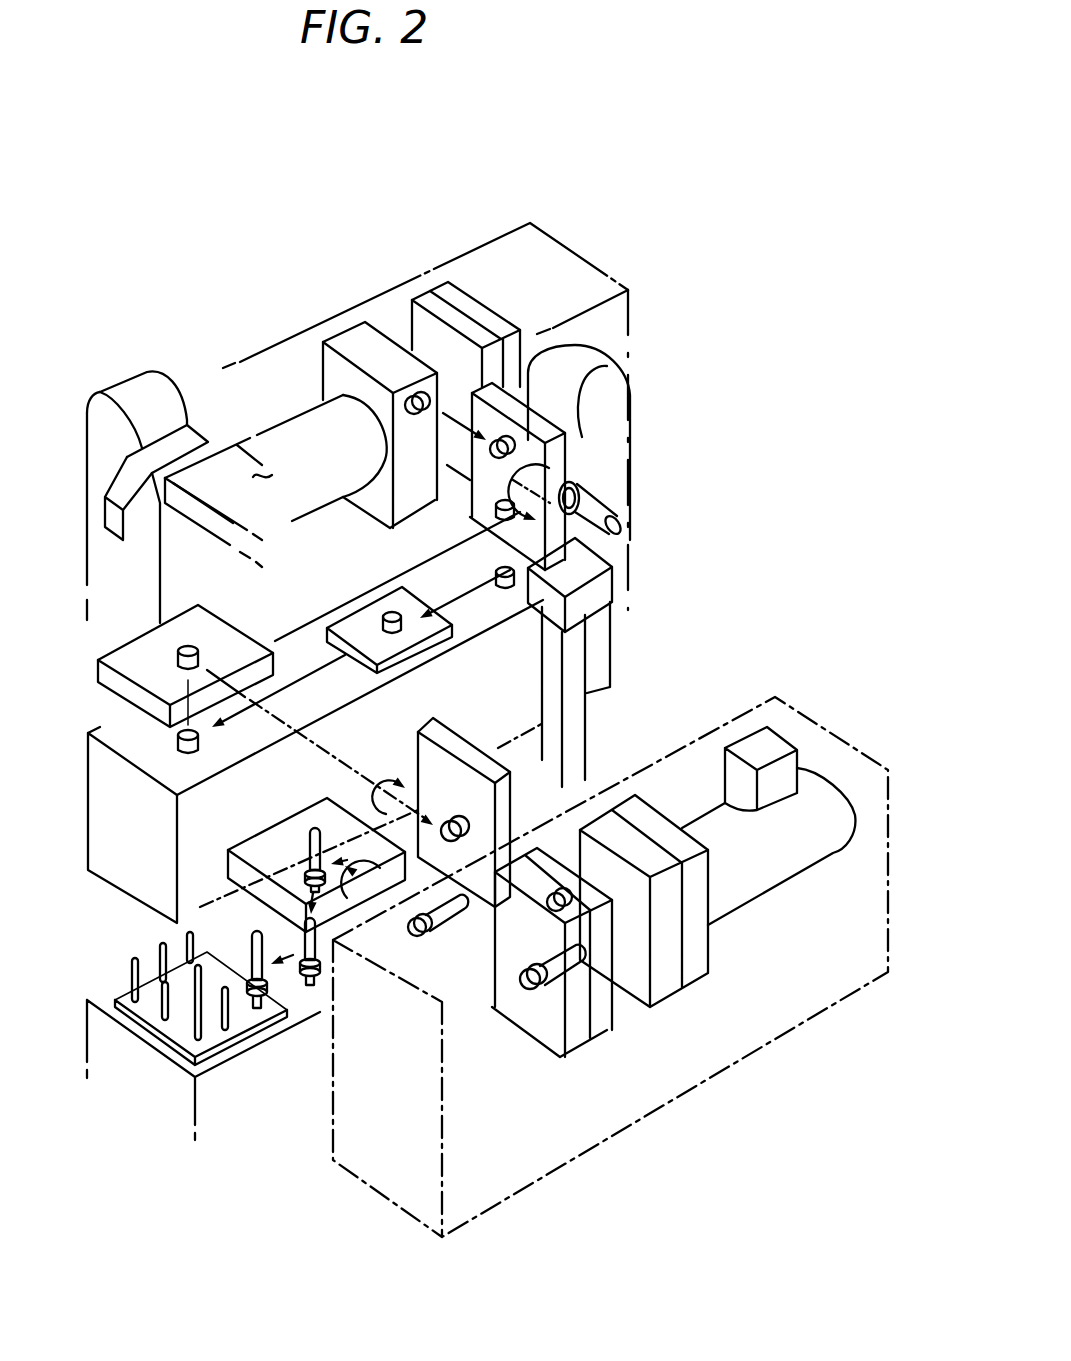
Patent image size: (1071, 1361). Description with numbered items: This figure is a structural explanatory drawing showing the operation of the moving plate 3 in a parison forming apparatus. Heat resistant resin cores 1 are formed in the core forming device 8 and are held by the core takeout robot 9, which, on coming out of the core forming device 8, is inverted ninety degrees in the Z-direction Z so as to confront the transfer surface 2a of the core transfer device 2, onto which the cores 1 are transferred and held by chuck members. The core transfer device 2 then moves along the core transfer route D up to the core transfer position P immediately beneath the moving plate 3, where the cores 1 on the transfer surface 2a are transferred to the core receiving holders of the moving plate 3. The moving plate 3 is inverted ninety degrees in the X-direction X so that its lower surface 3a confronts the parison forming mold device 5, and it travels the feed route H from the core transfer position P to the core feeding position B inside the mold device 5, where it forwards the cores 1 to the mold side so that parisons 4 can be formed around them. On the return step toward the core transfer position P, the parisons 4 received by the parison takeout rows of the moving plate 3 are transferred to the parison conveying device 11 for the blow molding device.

The core 1 is at (510, 440).
The core transfer device 2 is at (453, 637).
The transfer surface 2a is at (413, 640).
The moving plate 3 is at (96, 665).
The lower surface 3a is at (114, 697).
The parison 4 is at (257, 932).
The parison forming mold device 5 is at (587, 1048).
The core forming device 8 is at (375, 328).
The core takeout robot 9 is at (567, 440).
The parison conveying device 11 is at (157, 1033).
The core feeding position B is at (620, 934).
The core transfer route D is at (300, 677).
The feed route H is at (328, 757).
The core transfer position P is at (148, 726).
The X-direction X is at (374, 778).
The Z-direction Z is at (566, 469).